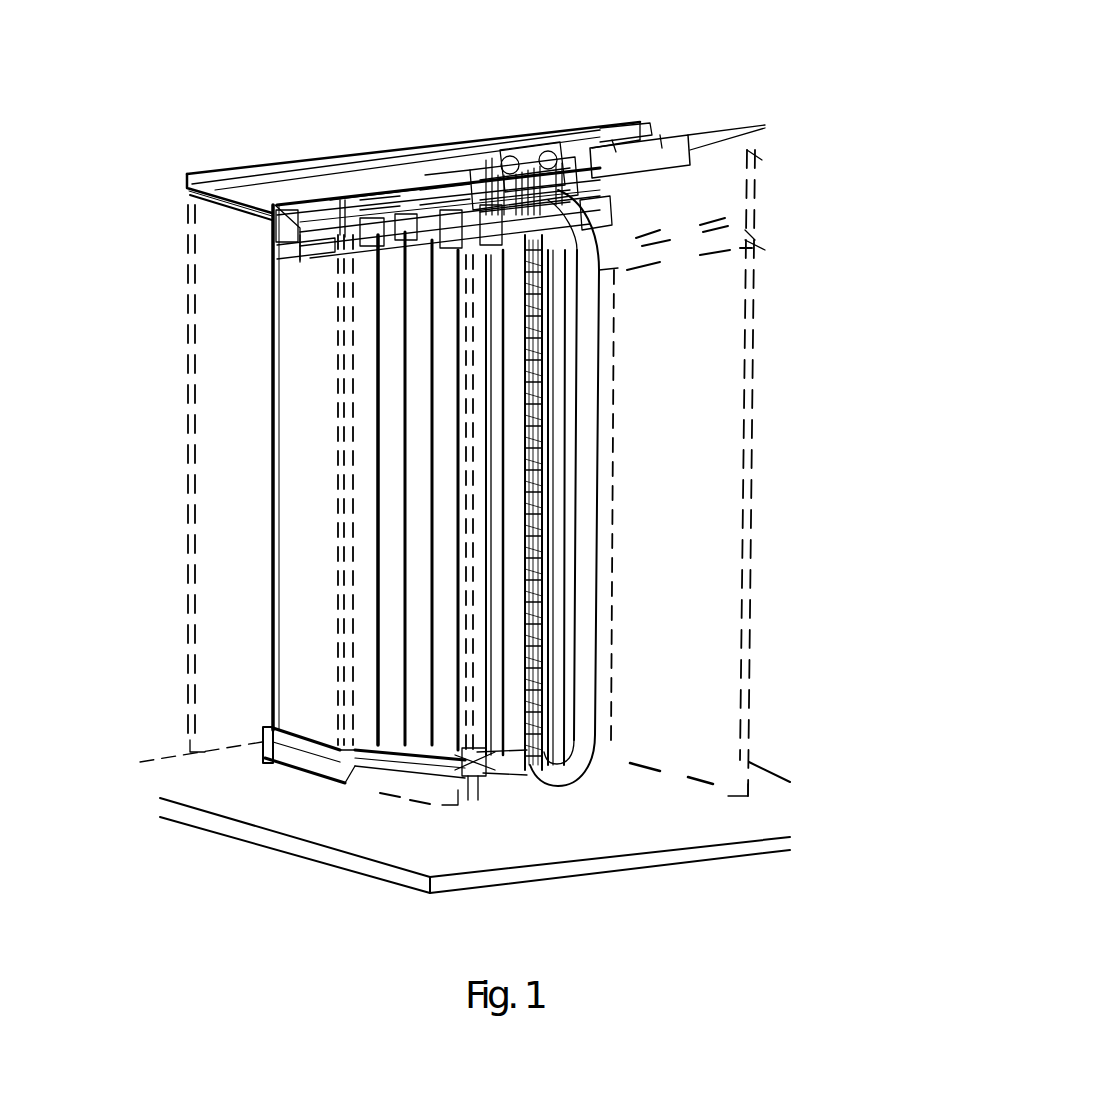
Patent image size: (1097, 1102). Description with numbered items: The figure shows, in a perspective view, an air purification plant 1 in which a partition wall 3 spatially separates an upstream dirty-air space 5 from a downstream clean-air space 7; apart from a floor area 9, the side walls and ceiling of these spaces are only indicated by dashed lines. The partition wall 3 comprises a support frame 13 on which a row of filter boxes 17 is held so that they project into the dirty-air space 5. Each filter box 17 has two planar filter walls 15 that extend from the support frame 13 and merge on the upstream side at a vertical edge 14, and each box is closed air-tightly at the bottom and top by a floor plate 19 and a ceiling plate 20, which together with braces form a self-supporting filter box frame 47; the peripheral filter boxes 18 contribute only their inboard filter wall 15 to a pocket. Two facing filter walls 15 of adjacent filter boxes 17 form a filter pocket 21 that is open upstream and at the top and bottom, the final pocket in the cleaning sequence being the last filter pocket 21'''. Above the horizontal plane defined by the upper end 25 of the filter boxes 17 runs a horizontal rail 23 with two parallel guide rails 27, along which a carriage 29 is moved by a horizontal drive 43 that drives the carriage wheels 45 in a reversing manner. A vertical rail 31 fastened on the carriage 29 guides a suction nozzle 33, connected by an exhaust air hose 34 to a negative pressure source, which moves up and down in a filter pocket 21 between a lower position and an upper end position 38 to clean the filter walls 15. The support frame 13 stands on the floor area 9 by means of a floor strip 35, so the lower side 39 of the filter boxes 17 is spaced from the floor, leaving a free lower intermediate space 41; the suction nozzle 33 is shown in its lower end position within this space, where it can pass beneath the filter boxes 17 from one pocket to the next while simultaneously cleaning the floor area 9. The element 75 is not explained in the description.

The air purification plant 1 is at (287, 59).
The partition wall 3 is at (187, 475).
The dirty-air space 5 is at (686, 465).
The clean-air space 7 is at (214, 570).
The floor area 9 is at (663, 828).
The support frame 13 is at (187, 475).
The vertical edge 14 is at (575, 502).
The filter walls 15 is at (585, 495).
The filter boxes 17 is at (420, 388).
The peripheral filter boxes 18 is at (310, 645).
The floor plate 19 is at (286, 826).
The ceiling plate 20 is at (204, 265).
The filter pocket 21 is at (563, 488).
The last filter pocket 21''' is at (247, 490).
The horizontal rail 23 is at (518, 163).
The upper end 25 is at (300, 253).
The guide rails 27 is at (518, 163).
The carriage 29 is at (543, 148).
The vertical rail 31 is at (515, 665).
The suction nozzle 33 is at (473, 762).
The exhaust air hose 34 is at (677, 482).
The floor strip 35 is at (262, 742).
The upper end position 38 is at (290, 226).
The lower side 39 is at (286, 826).
The free lower intermediate space 41 is at (367, 757).
The horizontal drive 43 is at (527, 150).
The carriage wheels 45 is at (508, 150).
The filter box frame 47 is at (433, 430).
The support 75 is at (590, 205).